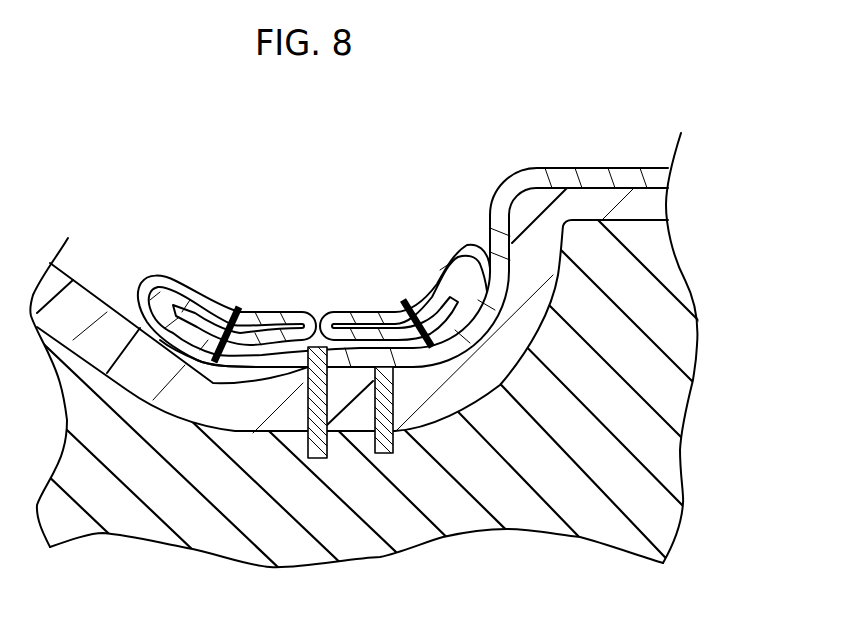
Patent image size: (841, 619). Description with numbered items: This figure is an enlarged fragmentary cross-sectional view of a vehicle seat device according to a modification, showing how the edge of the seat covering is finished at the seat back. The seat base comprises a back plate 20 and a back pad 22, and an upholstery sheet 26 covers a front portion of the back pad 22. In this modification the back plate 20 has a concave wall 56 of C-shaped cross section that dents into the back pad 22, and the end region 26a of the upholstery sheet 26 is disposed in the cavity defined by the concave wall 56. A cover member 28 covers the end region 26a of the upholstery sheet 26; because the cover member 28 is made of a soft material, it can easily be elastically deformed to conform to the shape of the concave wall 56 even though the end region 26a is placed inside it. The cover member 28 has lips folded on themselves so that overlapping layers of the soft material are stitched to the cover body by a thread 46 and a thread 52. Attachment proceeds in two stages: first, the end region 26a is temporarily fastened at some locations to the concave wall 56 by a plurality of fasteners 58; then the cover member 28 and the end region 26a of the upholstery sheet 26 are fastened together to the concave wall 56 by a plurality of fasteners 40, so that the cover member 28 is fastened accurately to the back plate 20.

The back plate 20 is at (662, 208).
The back pad 22 is at (677, 285).
The upholstery sheet 26 is at (619, 170).
The end region of the upholstery sheet 26a is at (213, 383).
The cover member 28 is at (422, 249).
The fasteners 40 is at (323, 450).
The thread 46 is at (403, 299).
The thread 52 is at (243, 307).
The concave wall 56 is at (268, 418).
The fasteners 58 is at (392, 452).